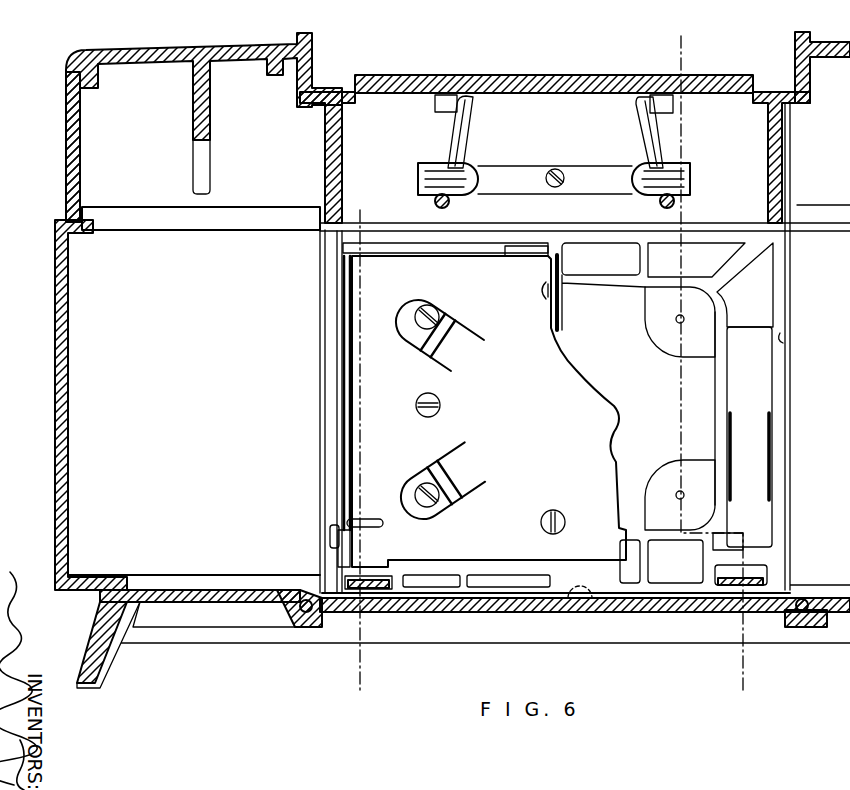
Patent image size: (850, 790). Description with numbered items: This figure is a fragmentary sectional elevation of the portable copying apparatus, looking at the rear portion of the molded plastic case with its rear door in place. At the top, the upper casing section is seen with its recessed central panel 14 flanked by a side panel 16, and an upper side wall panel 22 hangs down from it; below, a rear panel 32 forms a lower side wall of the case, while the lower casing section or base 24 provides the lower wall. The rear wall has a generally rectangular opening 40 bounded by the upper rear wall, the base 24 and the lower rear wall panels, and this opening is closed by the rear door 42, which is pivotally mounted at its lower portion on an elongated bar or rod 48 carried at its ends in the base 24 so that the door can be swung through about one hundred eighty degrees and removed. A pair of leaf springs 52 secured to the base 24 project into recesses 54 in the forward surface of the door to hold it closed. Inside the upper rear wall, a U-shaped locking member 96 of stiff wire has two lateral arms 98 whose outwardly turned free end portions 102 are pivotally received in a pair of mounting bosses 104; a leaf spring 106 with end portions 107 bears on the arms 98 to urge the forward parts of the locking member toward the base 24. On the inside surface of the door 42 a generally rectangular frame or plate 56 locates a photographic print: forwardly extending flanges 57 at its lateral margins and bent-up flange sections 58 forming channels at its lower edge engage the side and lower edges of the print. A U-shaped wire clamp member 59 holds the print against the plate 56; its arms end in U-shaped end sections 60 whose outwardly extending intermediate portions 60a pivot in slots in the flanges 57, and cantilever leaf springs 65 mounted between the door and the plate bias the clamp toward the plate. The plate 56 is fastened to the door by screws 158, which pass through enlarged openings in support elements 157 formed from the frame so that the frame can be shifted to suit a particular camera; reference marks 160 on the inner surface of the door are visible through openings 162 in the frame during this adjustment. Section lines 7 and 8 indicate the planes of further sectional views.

The side panels 16 is at (142, 50).
The upper side wall panels 22 is at (66, 150).
The rear panels 32 is at (56, 362).
The recessed central panel 14 is at (566, 75).
The free end portions 102 is at (487, 62).
The mounting bosses 104 is at (434, 102).
The locking member 96 is at (472, 129).
The leaf spring 106 is at (546, 143).
The end portions 107 is at (432, 164).
The lateral arms 98 is at (436, 203).
The rear opening 40 is at (403, 230).
The rear door 42 is at (650, 395).
The frame or plate 56 is at (532, 416).
The flanges 57 is at (338, 393).
The clamp member 59 is at (352, 420).
The cantilever leaf springs 65 is at (753, 487).
The slotted tab 157 is at (412, 327).
The screws 158 is at (437, 316).
The reference marks 160 is at (558, 300).
The openings 162 is at (548, 293).
The U-shaped end sections 60 is at (330, 537).
The intermediate portions 60a is at (338, 521).
The bent-up flange sections 58 is at (371, 566).
The recesses 54 is at (768, 572).
The rod 48 is at (807, 598).
The leaf springs 52 is at (385, 610).
The base 24 is at (351, 615).
The section line 7 is at (342, 210).
The section line 8 is at (647, 38).